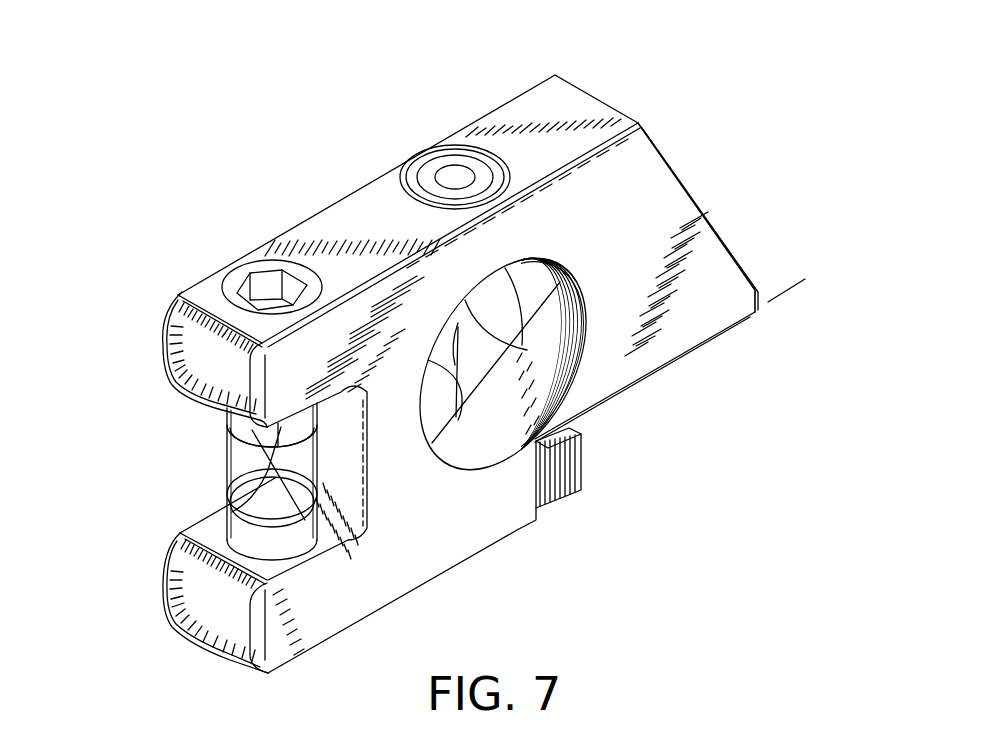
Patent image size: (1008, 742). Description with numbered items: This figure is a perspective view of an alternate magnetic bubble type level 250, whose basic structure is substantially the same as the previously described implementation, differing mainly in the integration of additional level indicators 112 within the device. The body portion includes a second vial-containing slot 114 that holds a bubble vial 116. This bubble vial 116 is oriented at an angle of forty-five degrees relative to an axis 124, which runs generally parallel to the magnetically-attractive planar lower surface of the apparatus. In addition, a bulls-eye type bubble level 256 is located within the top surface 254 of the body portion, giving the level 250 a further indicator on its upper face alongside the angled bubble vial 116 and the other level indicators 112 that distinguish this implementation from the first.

The magnetic bubble type level 250 is at (148, 124).
The top surface 254 is at (372, 210).
The bulls-eye type bubble level 256 is at (417, 177).
The axis 124 is at (785, 299).
The level indicator 112 is at (405, 130).
The second vial-containing slot 114 is at (557, 378).
The bubble vial 116 is at (223, 457).